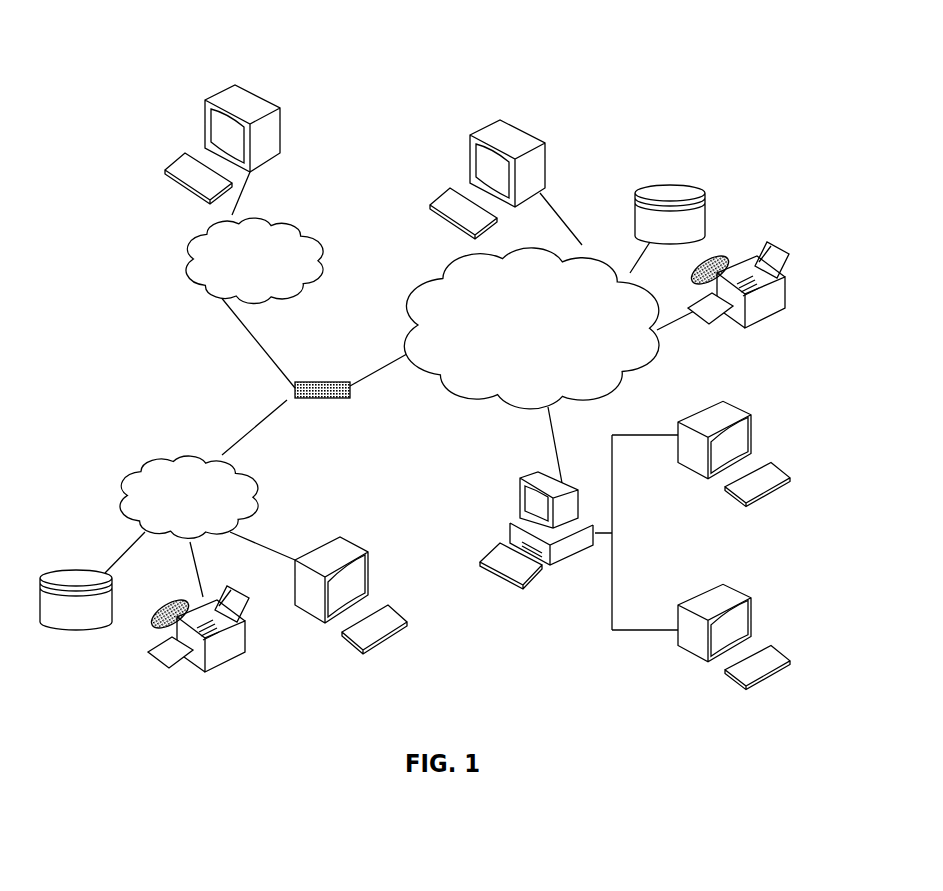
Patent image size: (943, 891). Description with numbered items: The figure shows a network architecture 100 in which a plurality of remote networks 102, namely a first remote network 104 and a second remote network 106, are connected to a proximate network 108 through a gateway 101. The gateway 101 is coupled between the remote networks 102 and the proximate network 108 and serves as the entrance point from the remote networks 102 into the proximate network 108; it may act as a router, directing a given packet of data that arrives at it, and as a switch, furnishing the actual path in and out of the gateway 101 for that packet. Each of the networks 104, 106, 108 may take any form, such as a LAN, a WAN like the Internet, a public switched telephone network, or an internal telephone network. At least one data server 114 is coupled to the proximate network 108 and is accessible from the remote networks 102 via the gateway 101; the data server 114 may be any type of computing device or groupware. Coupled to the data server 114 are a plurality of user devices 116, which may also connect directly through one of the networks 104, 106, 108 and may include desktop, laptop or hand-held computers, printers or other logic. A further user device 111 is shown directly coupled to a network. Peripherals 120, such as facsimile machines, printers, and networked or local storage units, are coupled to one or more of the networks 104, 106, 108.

The architecture 100 is at (145, 70).
The gateway 101 is at (304, 382).
The remote networks 102 is at (168, 314).
The first remote network 104 is at (127, 475).
The second remote network 106 is at (313, 233).
The proximate network 108 is at (625, 383).
The user device 111 is at (546, 148).
The data server 114 is at (520, 491).
The user devices 116 is at (280, 120).
The peripheral 120 is at (705, 192).